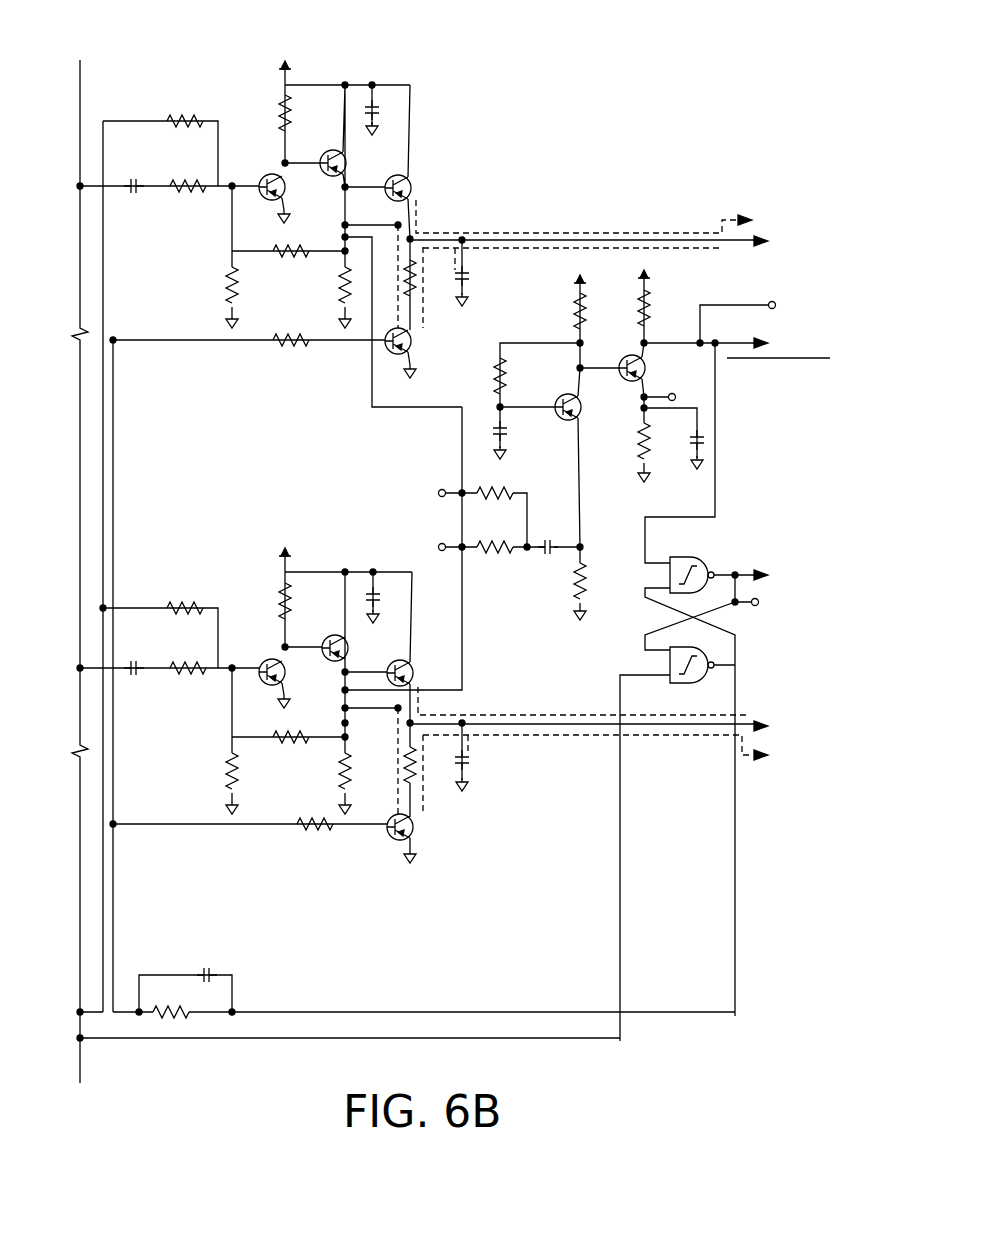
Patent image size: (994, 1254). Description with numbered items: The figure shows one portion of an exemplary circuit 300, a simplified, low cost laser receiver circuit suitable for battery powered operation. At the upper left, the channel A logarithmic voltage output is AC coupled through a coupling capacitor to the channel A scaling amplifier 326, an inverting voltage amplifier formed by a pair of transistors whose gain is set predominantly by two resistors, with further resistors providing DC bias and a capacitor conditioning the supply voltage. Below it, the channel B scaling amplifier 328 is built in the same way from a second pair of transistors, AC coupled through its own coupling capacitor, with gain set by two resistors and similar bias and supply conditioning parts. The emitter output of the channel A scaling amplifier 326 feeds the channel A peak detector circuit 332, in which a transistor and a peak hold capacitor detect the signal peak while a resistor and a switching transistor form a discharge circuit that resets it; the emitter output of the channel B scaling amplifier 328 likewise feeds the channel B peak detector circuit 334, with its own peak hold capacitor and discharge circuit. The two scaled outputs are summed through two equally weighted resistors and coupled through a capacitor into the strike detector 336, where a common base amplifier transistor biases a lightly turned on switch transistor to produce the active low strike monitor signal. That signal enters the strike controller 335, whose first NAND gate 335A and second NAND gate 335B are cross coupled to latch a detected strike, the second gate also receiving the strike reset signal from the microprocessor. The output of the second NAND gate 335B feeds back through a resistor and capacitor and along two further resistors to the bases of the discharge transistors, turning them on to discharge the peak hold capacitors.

The circuit 300 is at (458, 549).
The channel A scaling amplifier 326 is at (224, 82).
The channel B scaling amplifier 328 is at (254, 574).
The channel A peak detector circuit 332 is at (450, 212).
The channel B peak detector circuit 334 is at (474, 700).
The strike controller 335 is at (699, 765).
The first NAND gate 335A is at (690, 557).
The second NAND gate 335B is at (668, 670).
The strike detector 336 is at (408, 478).